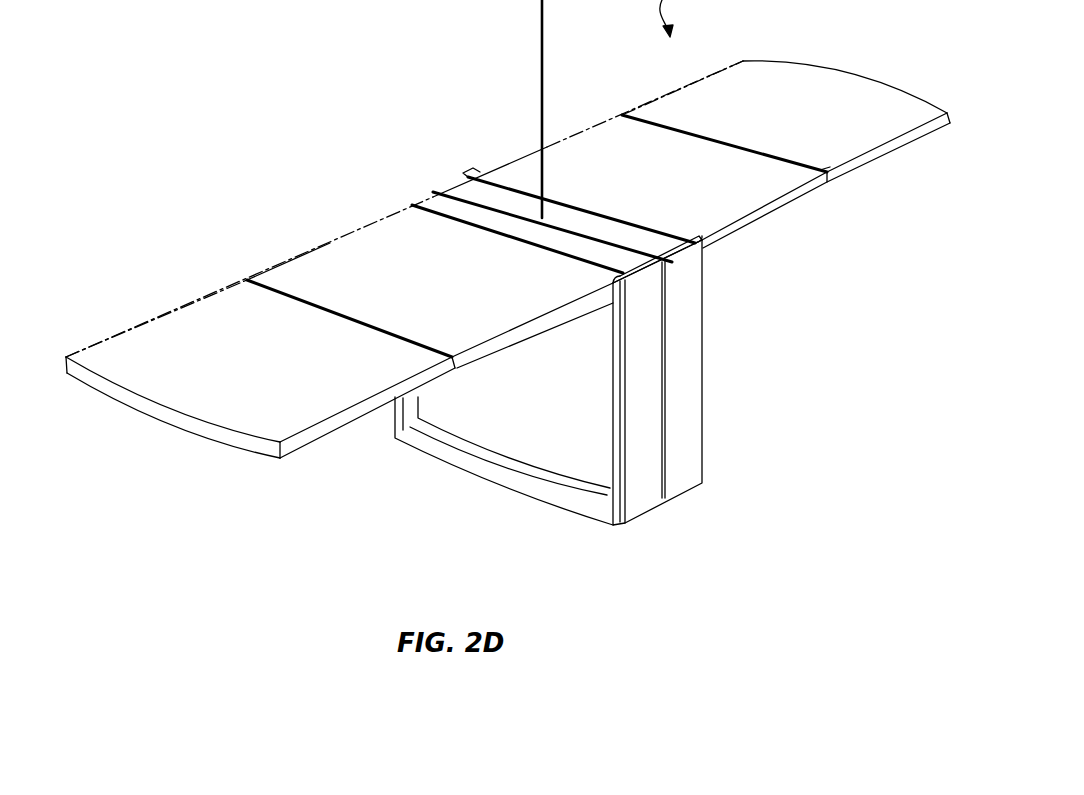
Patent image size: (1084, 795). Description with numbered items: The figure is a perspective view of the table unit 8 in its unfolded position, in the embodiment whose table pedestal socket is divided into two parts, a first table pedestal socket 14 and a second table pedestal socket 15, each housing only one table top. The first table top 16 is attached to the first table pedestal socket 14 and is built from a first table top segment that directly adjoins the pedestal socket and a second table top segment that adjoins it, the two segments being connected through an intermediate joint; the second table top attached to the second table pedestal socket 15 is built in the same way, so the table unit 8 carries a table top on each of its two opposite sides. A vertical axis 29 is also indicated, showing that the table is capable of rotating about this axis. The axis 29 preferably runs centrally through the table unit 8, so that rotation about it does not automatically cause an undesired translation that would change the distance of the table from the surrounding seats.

The table unit 8 is at (263, 176).
The first table pedestal socket 14 is at (462, 474).
The second table pedestal socket 15 is at (700, 421).
The first table top 16 is at (245, 483).
The vertical axis 29 is at (541, 31).